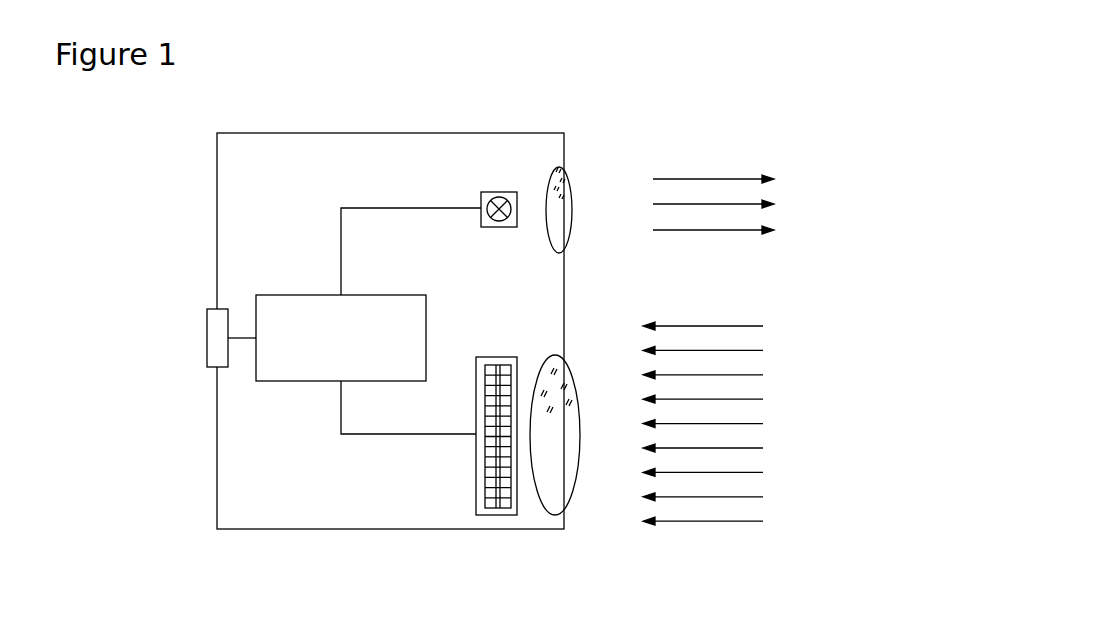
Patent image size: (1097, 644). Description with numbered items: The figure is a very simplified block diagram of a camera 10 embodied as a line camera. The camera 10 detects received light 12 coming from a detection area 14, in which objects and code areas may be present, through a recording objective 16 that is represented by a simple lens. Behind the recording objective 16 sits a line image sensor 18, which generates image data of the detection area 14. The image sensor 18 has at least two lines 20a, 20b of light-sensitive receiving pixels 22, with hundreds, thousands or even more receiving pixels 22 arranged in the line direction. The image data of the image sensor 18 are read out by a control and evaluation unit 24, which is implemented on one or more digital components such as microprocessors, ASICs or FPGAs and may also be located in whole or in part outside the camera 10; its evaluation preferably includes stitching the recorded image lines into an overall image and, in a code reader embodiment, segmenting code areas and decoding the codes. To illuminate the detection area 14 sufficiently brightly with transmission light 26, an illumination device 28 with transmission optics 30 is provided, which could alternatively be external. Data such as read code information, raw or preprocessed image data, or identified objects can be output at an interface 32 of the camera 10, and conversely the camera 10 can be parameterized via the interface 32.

The camera 10 is at (358, 107).
The received light 12 is at (698, 533).
The detection area 14 is at (923, 210).
The recording objective 16 is at (568, 477).
The line image sensor 18 is at (446, 439).
The line of receiving pixels 20a is at (490, 502).
The line of receiving pixels 20b is at (503, 500).
The receiving pixels 22 is at (480, 439).
The control and evaluation unit 24 is at (317, 327).
The transmission light 26 is at (698, 172).
The illumination device 28 is at (493, 193).
The transmission optics 30 is at (568, 198).
The interface 32 is at (215, 332).